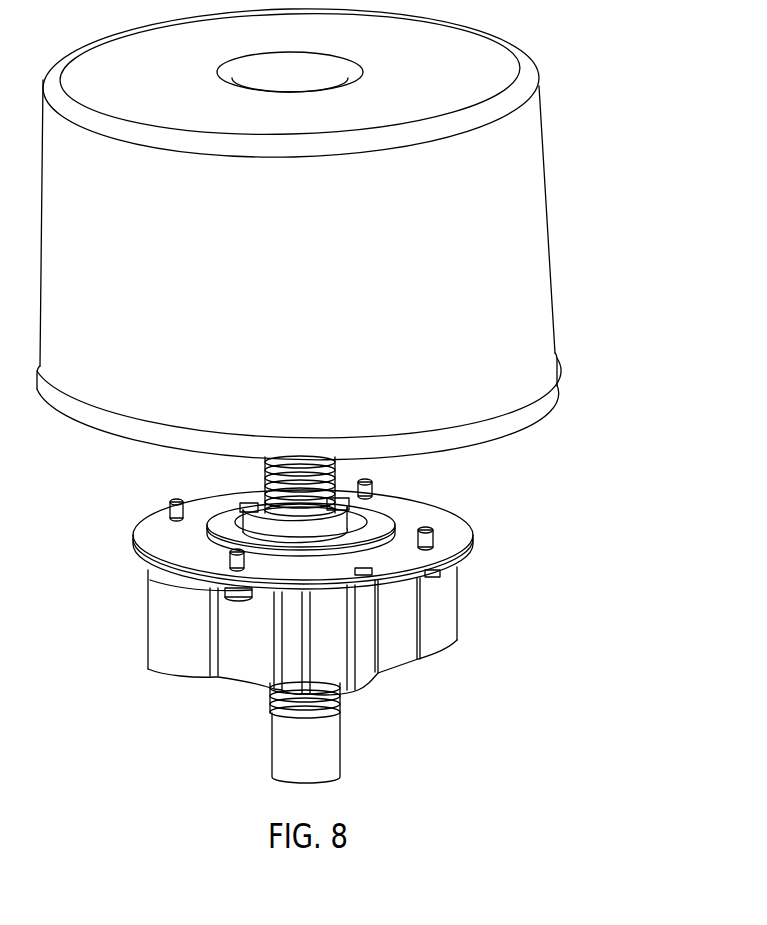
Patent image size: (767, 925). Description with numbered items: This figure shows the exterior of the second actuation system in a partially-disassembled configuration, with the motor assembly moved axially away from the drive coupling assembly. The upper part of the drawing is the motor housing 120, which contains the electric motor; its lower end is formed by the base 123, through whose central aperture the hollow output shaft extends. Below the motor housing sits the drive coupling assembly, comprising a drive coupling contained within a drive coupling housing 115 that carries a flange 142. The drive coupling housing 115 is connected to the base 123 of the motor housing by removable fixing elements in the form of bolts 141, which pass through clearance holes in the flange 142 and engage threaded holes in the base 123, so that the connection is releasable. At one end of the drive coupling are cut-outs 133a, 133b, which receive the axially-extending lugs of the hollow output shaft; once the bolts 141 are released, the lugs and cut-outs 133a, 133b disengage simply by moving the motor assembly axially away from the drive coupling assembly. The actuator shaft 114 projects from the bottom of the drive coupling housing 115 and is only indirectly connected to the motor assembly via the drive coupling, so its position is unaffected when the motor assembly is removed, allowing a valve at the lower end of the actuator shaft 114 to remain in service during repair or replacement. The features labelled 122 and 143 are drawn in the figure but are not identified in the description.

The motor housing 120 is at (381, 231).
The cap top wall 122 is at (442, 97).
The base 123 is at (483, 423).
The threaded stud with boss ring 143 is at (377, 513).
The cut-out 133a is at (352, 504).
The cut-out 133b is at (253, 503).
The flange 142 is at (187, 567).
The bolt 141 is at (233, 592).
The drive coupling housing 115 is at (400, 622).
The actuator shaft 114 is at (283, 707).